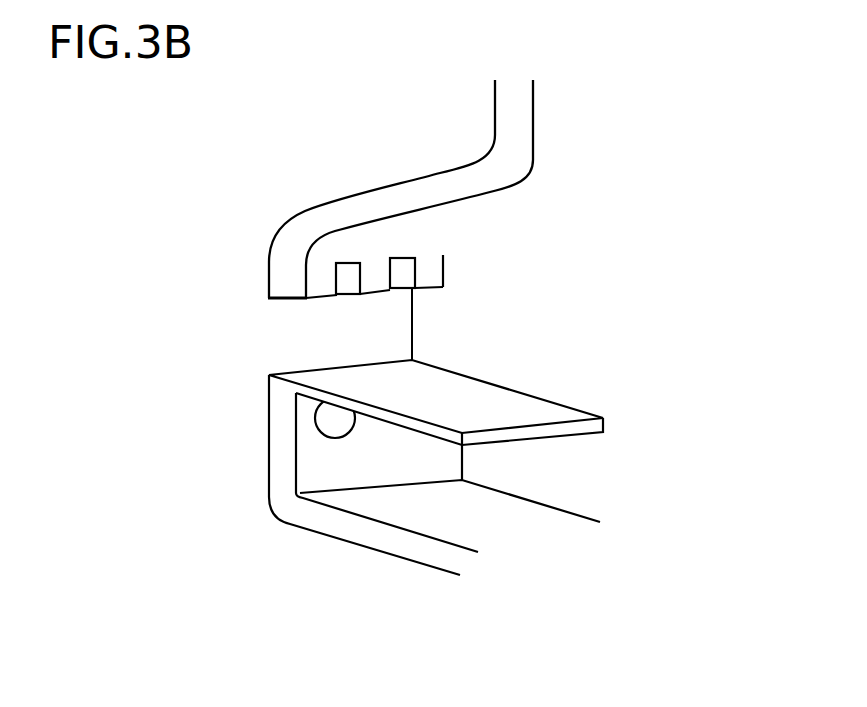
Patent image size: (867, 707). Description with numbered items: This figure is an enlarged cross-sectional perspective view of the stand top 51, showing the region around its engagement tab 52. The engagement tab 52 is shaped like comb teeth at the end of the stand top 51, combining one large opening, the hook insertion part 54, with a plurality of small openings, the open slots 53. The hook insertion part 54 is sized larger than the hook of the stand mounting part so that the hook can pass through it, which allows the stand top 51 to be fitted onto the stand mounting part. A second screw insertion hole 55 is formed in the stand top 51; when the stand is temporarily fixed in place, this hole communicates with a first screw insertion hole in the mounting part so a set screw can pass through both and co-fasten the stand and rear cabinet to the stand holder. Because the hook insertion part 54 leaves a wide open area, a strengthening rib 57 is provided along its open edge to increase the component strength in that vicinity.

The stand top 51 is at (423, 187).
The engagement tab 52 is at (280, 272).
The open slots 53 is at (343, 273).
The hook insertion part 54 is at (300, 337).
The second screw insertion holes 55 is at (315, 428).
The strengthening rib 57 is at (467, 395).